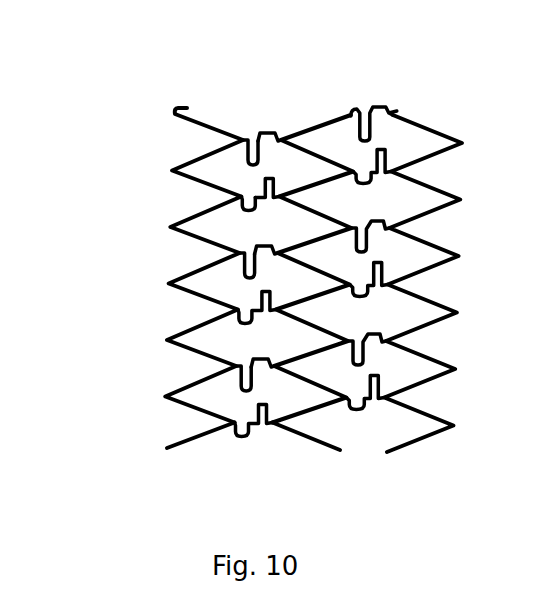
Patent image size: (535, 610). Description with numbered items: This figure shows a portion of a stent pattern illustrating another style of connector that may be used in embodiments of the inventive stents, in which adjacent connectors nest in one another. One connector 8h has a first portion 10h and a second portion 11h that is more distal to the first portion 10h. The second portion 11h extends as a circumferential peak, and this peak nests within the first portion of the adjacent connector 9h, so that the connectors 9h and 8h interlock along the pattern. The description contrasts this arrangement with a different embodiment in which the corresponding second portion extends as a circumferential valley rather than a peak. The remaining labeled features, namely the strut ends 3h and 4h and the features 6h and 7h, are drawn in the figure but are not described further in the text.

The strut 3h is at (205, 457).
The strut 4h is at (311, 447).
The slot 6h is at (227, 389).
The tab 7h is at (275, 391).
The connector 8h is at (245, 227).
The adjacent connector 9h is at (254, 124).
The first portion 10h is at (266, 276).
The second portion 11h is at (234, 284).